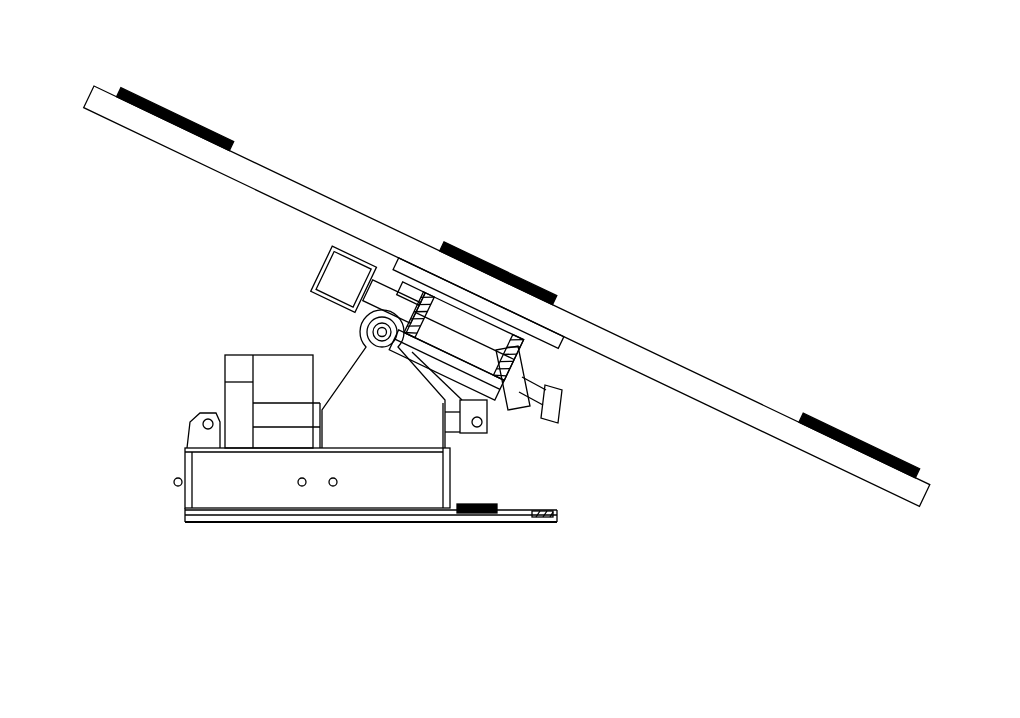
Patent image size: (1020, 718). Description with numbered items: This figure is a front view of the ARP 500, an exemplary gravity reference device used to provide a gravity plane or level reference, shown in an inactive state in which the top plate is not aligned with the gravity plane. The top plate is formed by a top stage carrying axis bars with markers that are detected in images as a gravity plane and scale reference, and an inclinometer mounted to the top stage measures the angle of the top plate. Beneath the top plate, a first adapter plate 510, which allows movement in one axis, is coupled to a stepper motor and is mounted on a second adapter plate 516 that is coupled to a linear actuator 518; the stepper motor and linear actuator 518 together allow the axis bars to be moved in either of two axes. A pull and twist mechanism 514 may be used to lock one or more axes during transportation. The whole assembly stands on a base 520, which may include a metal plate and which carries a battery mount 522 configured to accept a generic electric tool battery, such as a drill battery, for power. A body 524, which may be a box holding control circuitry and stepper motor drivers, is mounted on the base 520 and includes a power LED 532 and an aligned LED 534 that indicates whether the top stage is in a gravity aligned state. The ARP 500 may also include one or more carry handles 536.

The ARP 500 is at (156, 58).
The first adapter plate 510 is at (547, 372).
The pull and twist mechanism 514 is at (548, 412).
The second adapter plate 516 is at (493, 420).
The linear actuator 518 is at (242, 404).
The base 520 is at (511, 523).
The battery mount 522 is at (498, 508).
The body 524 is at (282, 478).
The power LED 532 is at (335, 487).
The aligned LED 534 is at (300, 487).
The carry handles 536 is at (175, 486).